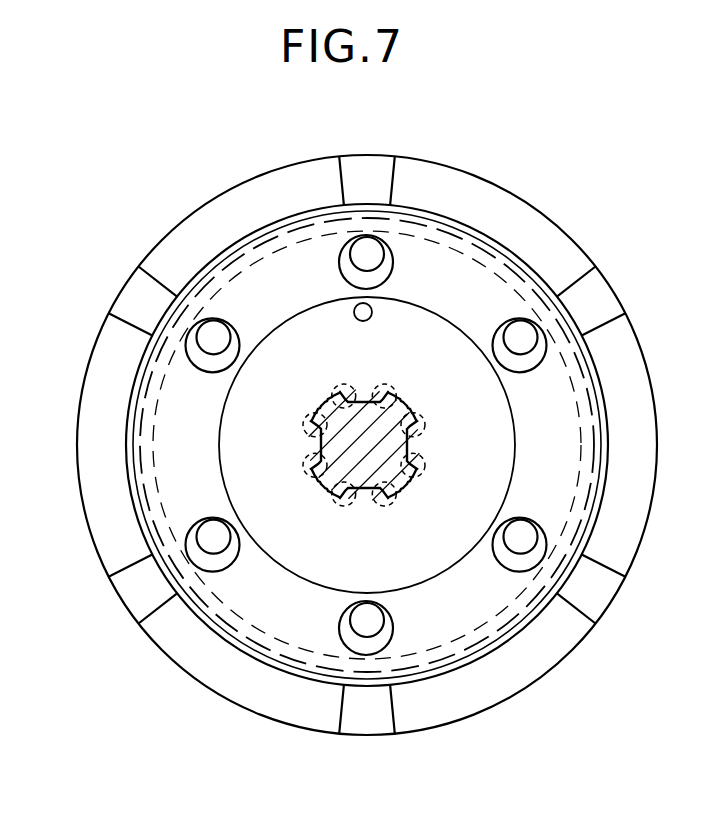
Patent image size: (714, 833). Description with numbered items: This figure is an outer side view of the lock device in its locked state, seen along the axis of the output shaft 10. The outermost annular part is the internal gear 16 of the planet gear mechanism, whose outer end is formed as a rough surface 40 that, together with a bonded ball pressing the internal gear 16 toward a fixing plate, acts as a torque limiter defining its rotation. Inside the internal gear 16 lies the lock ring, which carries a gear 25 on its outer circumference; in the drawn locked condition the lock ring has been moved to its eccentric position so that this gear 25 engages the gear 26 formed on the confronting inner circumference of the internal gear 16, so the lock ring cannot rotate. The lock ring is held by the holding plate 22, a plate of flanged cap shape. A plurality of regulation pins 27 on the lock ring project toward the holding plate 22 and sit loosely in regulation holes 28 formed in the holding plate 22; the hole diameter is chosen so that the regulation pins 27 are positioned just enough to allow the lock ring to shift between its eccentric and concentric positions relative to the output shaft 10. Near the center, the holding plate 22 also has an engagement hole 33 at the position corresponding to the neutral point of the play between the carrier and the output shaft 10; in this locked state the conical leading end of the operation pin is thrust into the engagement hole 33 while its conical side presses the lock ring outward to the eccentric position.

The output shaft 10 is at (402, 400).
The internal gear 16 is at (525, 687).
The holding plate 22 is at (182, 502).
The gear 25 is at (172, 586).
The gear 26 is at (202, 630).
The regulation pins 27 is at (360, 622).
The regulation holes 28 is at (362, 654).
The engagement hole 33 is at (370, 306).
The rough surface 40 is at (372, 707).